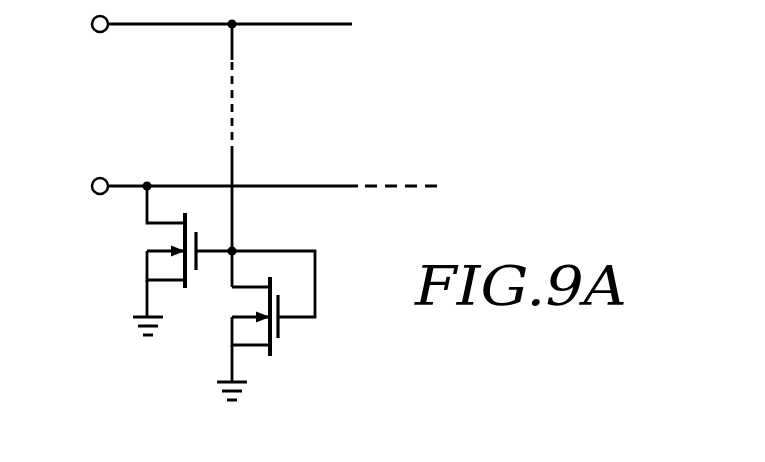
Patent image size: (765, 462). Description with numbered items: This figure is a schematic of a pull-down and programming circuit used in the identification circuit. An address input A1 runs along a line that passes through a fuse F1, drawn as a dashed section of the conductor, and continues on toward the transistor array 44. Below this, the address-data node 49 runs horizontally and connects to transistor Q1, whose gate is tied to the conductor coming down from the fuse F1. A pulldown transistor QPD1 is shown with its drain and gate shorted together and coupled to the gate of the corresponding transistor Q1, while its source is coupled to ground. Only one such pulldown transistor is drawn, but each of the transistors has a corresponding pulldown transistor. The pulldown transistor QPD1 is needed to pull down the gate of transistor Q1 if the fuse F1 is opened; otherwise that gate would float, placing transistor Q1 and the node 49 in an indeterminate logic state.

The A/D node 49 is at (288, 186).
The transistor array 44 is at (487, 37).
The address line A1 is at (201, 24).
The fuse F1 is at (252, 155).
The transistor Q1 is at (172, 260).
The pulldown transistor QPD1 is at (291, 325).